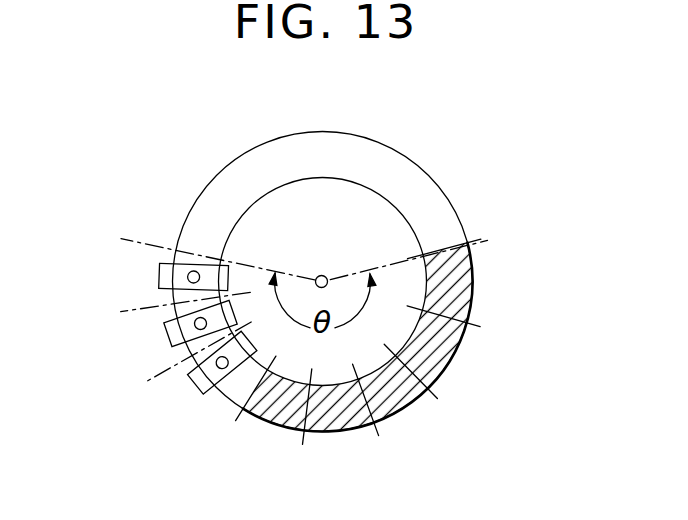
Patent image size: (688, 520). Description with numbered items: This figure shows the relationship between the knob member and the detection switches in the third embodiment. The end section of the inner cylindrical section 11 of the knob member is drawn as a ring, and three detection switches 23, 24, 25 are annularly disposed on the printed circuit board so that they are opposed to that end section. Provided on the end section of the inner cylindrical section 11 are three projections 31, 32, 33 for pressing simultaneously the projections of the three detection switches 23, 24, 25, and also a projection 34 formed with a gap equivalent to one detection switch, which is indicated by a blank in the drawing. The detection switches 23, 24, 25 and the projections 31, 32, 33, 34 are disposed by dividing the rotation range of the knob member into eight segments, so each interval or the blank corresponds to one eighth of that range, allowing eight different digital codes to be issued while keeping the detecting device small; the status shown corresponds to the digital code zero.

The inner cylindrical section 11 is at (413, 177).
The detection switch 23 is at (195, 385).
The detection switch 24 is at (168, 333).
The detection switch 25 is at (158, 268).
The projection 31 is at (263, 425).
The projection 32 is at (350, 432).
The projection 33 is at (403, 418).
The projection 34 is at (472, 293).